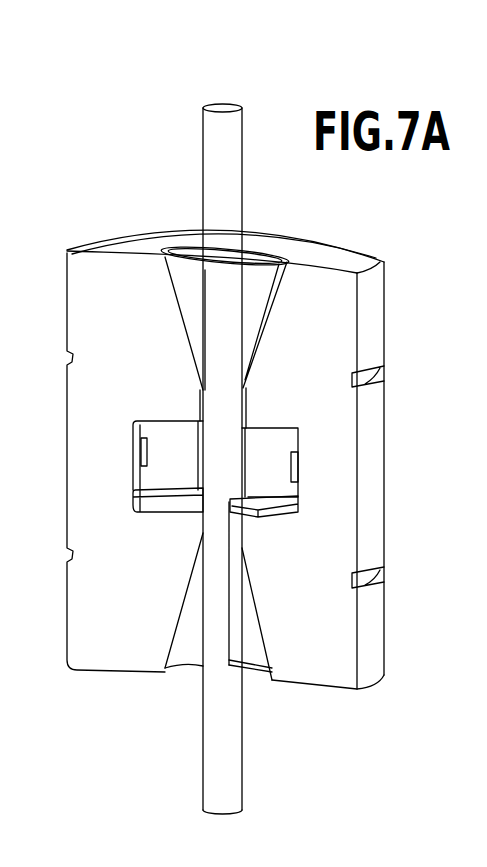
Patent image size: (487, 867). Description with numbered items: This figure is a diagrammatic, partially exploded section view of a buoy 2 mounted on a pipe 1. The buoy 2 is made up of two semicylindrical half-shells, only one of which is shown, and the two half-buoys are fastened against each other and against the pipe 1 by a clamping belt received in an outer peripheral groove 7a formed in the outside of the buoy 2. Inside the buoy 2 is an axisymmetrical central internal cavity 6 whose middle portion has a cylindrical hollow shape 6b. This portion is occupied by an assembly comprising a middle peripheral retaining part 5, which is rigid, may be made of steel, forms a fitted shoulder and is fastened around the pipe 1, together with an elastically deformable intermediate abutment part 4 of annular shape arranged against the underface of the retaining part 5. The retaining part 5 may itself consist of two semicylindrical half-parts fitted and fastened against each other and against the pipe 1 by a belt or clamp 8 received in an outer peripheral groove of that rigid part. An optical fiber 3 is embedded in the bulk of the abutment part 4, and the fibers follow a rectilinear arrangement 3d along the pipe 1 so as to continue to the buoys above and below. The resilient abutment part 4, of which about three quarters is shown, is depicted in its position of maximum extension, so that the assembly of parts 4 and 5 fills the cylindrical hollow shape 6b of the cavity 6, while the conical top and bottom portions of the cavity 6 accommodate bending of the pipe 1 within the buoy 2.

The pipe 1 is at (210, 135).
The buoy 2 is at (100, 270).
The optical fiber 3 is at (229, 655).
The rectilinear arrangement 3d is at (203, 318).
The intermediate abutment part 4 is at (268, 514).
The middle peripheral retaining part 5 is at (170, 468).
The central internal cavity 6 is at (256, 283).
The cylindrical hollow shape 6b is at (138, 430).
The outer peripheral groove 7a is at (362, 378).
The belt or clamp 8 is at (298, 463).